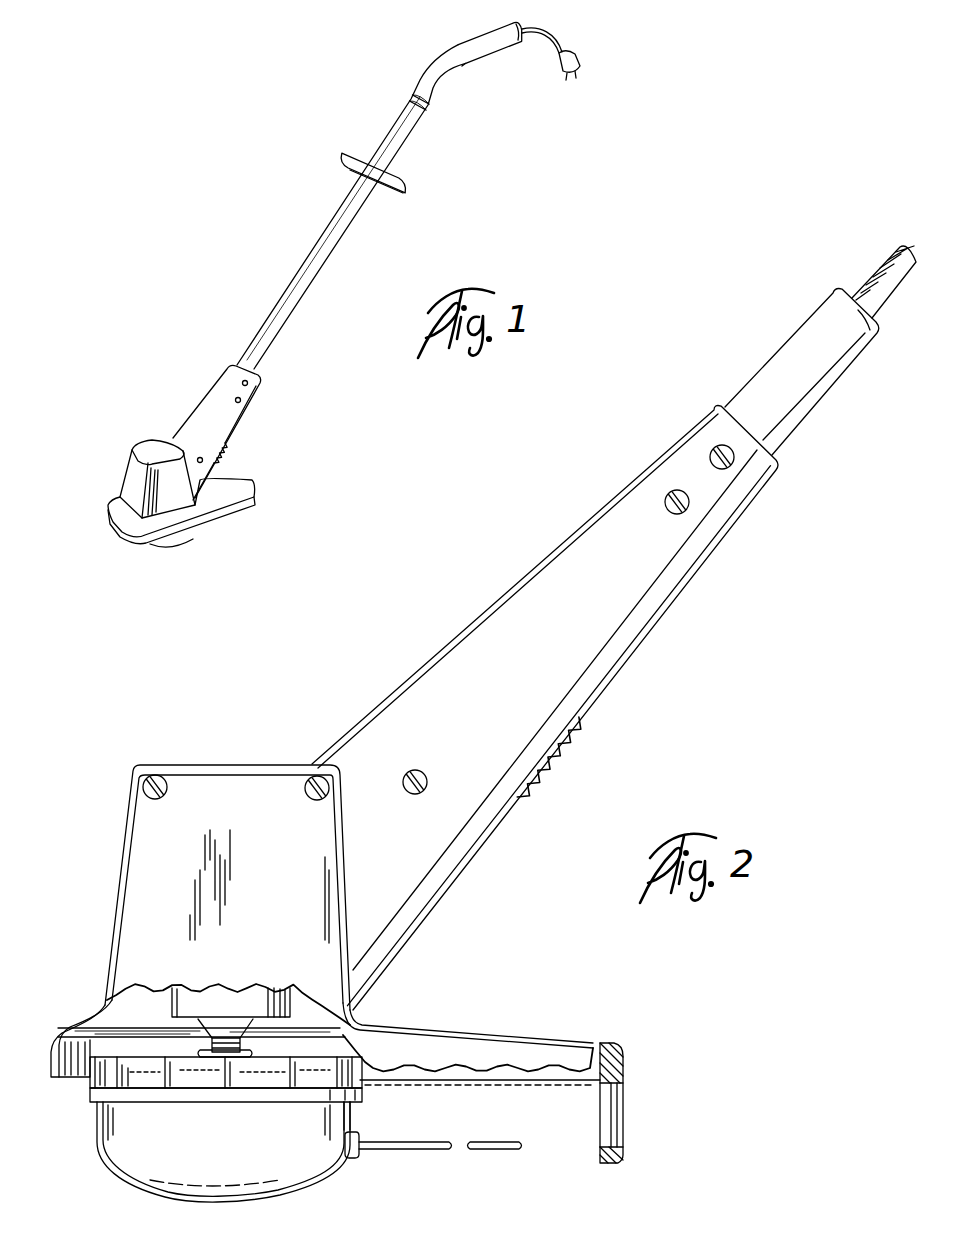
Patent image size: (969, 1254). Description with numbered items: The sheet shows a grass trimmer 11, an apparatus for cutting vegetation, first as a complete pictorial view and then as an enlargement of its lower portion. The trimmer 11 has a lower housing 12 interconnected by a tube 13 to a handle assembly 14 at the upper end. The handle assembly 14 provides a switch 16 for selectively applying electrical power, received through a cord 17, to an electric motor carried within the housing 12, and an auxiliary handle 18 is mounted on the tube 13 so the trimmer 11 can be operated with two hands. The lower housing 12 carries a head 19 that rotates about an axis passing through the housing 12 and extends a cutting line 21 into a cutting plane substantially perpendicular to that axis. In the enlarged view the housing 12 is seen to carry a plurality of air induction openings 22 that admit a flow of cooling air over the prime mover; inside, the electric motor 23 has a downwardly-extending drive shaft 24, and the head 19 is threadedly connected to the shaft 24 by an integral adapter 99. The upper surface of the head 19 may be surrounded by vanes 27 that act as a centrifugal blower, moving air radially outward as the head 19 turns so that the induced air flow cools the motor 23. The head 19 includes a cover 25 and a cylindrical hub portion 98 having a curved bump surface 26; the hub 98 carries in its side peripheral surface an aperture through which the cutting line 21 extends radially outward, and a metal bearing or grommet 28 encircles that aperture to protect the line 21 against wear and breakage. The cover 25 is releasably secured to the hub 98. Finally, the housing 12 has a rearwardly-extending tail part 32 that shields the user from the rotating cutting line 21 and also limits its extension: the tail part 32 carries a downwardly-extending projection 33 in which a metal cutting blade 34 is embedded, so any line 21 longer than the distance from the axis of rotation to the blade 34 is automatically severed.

In FIG. 1, the grass trimmer 11 is at (214, 290).
In FIG. 1, the lower housing 12 is at (205, 400).
In FIG. 2, the lower housing 12 is at (513, 583).
In FIG. 1, the tube 13 is at (300, 287).
In FIG. 2, the tube 13 is at (780, 350).
In FIG. 1, the handle assembly 14 is at (470, 43).
In FIG. 1, the switch 16 is at (442, 82).
In FIG. 1, the cord 17 is at (562, 38).
In FIG. 2, the cord 17 is at (877, 275).
In FIG. 1, the auxiliary handle 18 is at (397, 188).
In FIG. 1, the head 19 is at (137, 553).
In FIG. 2, the head 19 is at (98, 1162).
In FIG. 1, the cutting line 21 is at (237, 557).
In FIG. 2, the cutting line 21 is at (487, 1150).
In FIG. 2, the air induction openings 22 is at (550, 753).
In FIG. 2, the electric motor 23 is at (197, 1000).
In FIG. 2, the drive shaft 24 is at (227, 1040).
In FIG. 2, the cover 25 is at (363, 1097).
In FIG. 2, the curved bump surface 26 is at (257, 1203).
In FIG. 2, the vanes 27 is at (380, 1068).
In FIG. 2, the grommet 28 is at (360, 1160).
In FIG. 1, the tail part 32 is at (240, 484).
In FIG. 2, the tail part 32 is at (540, 1033).
In FIG. 2, the projection 33 is at (617, 1165).
In FIG. 2, the cutting blade 34 is at (617, 1122).
In FIG. 2, the cylindrical hub portion 98 is at (353, 1120).
In FIG. 2, the integral adapter 99 is at (253, 1053).